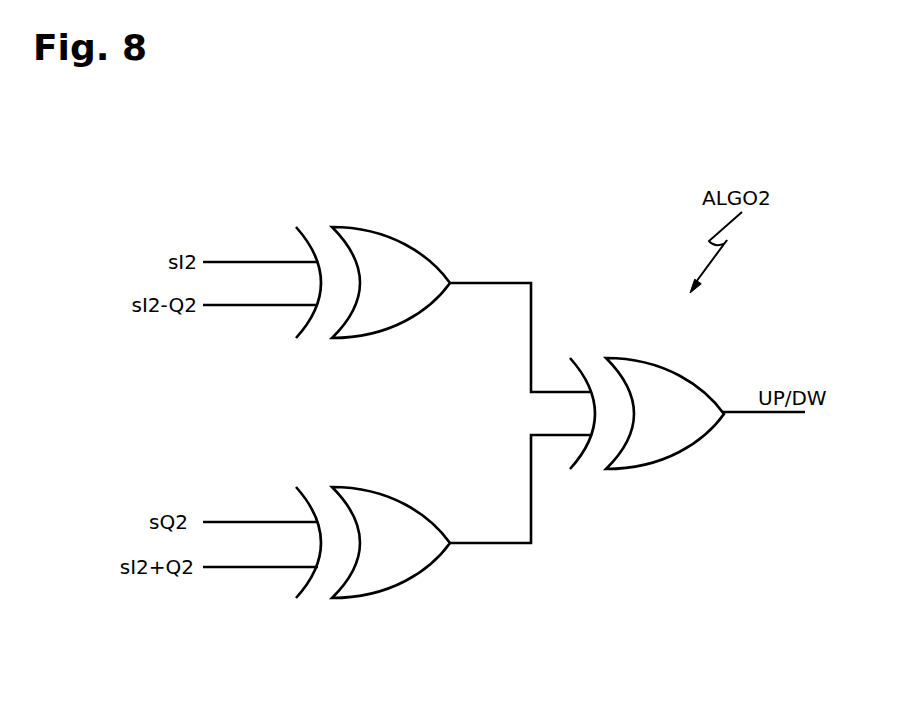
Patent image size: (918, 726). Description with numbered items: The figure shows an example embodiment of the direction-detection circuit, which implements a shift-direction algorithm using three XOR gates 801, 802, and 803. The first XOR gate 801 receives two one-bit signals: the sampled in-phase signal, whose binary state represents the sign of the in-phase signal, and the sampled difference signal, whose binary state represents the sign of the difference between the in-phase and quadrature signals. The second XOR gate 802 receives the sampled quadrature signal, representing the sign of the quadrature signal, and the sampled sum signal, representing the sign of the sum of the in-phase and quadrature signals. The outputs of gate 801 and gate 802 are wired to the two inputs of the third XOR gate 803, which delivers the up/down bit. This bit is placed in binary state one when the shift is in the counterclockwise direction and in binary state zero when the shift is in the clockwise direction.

The XOR gate 801 is at (393, 283).
The XOR gate 802 is at (385, 545).
The XOR gate 803 is at (655, 412).